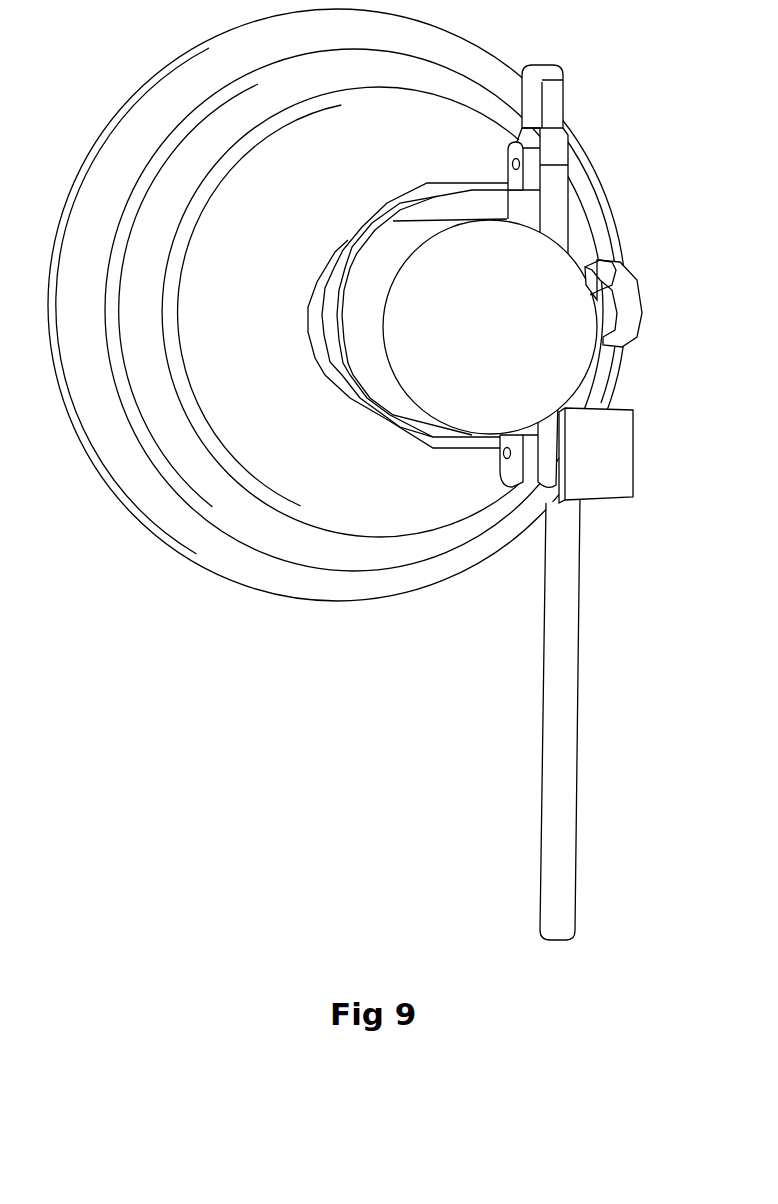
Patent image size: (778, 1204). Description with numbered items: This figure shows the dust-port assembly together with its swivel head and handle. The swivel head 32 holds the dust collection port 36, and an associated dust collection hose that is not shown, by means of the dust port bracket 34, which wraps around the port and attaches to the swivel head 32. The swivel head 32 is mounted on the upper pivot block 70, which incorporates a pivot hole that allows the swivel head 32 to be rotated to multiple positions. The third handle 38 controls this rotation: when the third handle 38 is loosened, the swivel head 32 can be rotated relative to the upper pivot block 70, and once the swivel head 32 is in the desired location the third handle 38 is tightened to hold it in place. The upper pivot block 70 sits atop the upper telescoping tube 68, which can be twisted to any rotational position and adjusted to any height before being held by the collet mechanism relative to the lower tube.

The swivel head 32 is at (558, 95).
The dust port bracket 34 is at (350, 393).
The dust collection port 36 is at (142, 115).
The third handle 38 is at (633, 303).
The upper telescoping tube 68 is at (568, 657).
The upper pivot block 70 is at (620, 462).